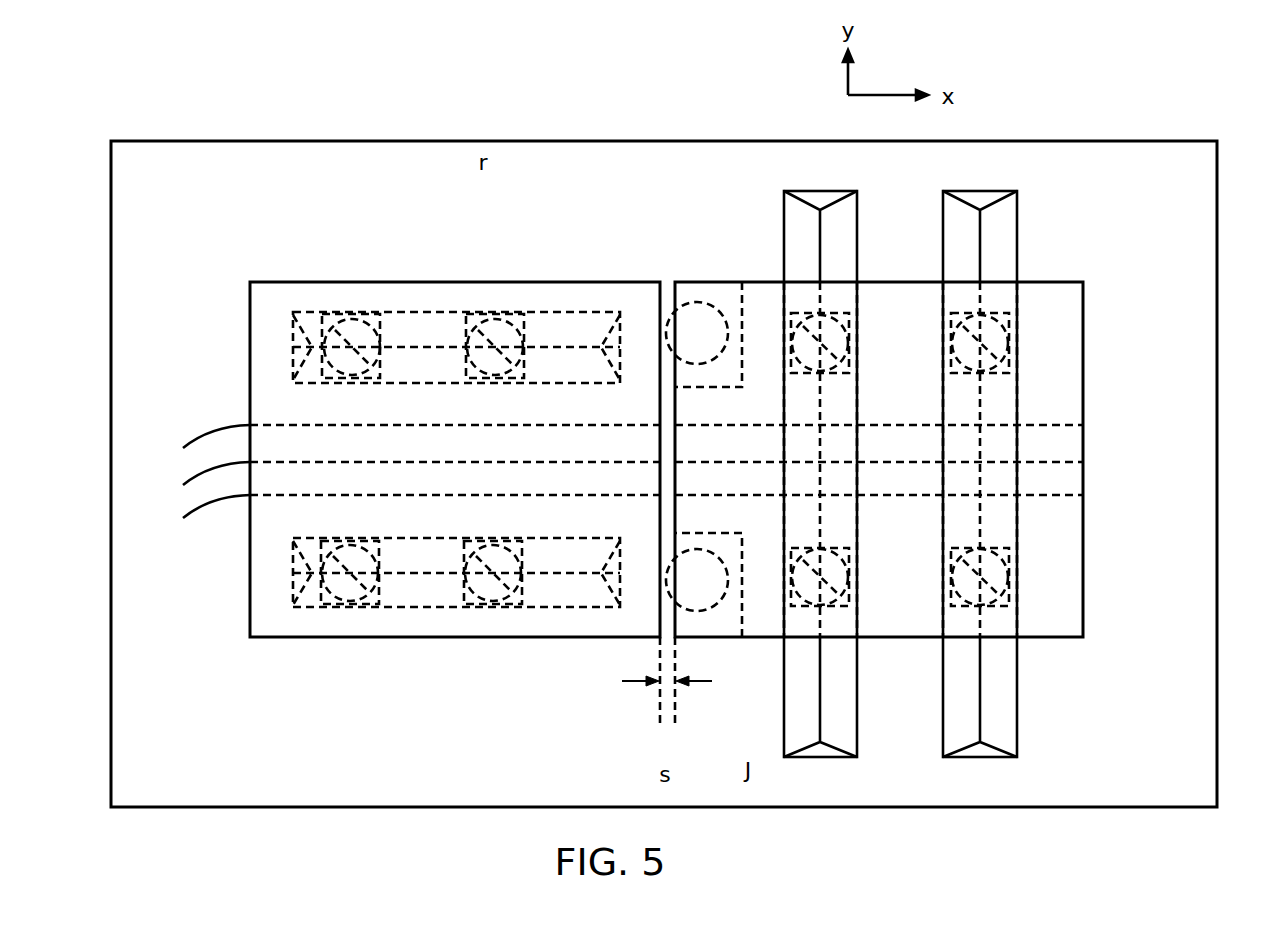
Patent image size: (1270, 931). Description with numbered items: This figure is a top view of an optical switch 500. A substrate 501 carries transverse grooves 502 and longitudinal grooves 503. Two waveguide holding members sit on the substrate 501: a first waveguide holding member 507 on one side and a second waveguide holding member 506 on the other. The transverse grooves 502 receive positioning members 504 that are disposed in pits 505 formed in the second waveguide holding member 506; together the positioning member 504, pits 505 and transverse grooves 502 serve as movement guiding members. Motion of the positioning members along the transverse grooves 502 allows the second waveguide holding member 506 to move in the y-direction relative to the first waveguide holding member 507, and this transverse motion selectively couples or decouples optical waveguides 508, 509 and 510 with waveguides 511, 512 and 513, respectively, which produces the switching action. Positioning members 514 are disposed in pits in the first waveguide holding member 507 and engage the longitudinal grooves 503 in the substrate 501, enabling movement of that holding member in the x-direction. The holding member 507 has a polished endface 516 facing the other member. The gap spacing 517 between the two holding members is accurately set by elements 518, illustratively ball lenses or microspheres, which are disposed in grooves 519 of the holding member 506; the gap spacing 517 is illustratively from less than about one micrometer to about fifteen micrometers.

The optical switch 500 is at (1150, 92).
The substrate 501 is at (1203, 188).
The transverse grooves 502 is at (840, 215).
The longitudinal grooves 503 is at (470, 310).
The positioning member 504 is at (1002, 352).
The pit 505 is at (1008, 342).
The second waveguide holding member 506 is at (1065, 313).
The first waveguide holding member 507 is at (592, 290).
The optical waveguide 508 is at (1083, 425).
The optical waveguide 509 is at (1083, 462).
The optical waveguide 510 is at (1083, 495).
The waveguide 511 is at (536, 428).
The waveguide 512 is at (536, 463).
The waveguide 513 is at (536, 496).
The positioning members 514 is at (505, 315).
The endface 516 is at (663, 290).
The gap spacing 517 is at (622, 681).
The elements 518 is at (708, 607).
The grooves 519 is at (714, 388).